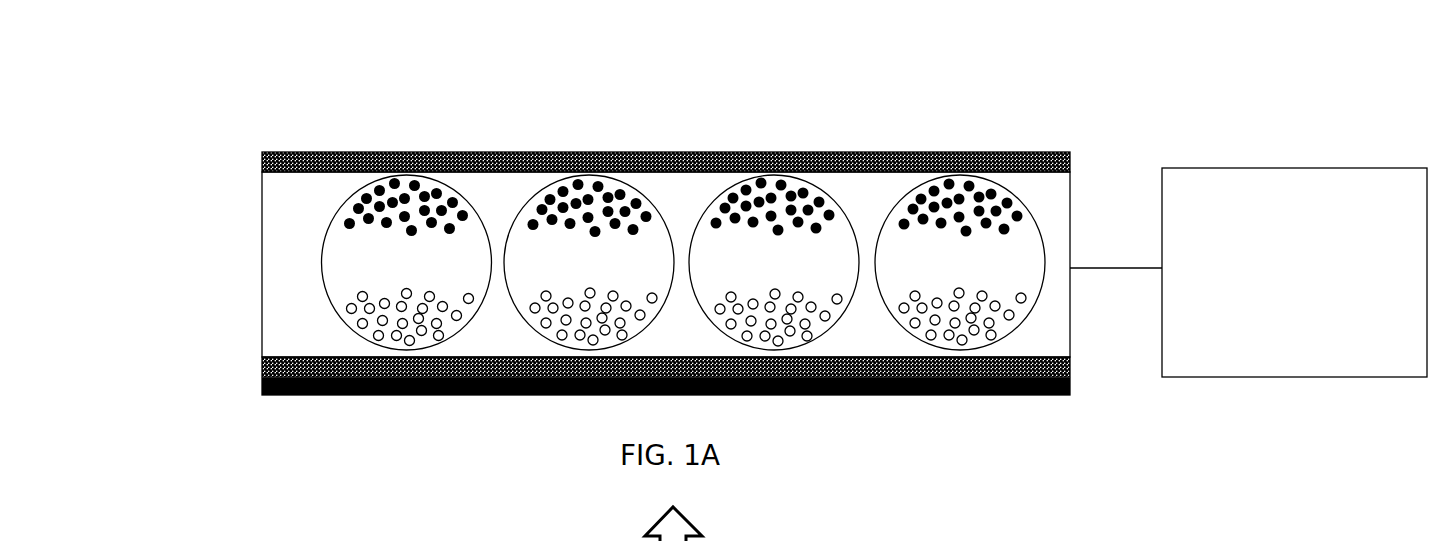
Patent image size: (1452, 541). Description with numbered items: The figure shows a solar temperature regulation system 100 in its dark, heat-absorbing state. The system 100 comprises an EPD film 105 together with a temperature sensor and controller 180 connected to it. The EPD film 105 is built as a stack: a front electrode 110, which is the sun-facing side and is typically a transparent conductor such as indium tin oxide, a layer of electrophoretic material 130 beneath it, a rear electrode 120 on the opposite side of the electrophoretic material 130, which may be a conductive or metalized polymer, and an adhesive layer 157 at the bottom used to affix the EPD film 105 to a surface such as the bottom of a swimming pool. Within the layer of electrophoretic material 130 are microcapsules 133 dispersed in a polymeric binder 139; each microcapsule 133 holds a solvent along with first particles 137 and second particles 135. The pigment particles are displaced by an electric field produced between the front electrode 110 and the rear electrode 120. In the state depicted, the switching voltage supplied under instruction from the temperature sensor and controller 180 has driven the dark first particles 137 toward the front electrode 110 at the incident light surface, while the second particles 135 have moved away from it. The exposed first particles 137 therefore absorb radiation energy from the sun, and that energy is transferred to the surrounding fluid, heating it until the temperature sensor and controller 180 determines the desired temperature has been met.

The system 100 is at (1063, 120).
The EPD film 105 is at (158, 145).
The front electrode 110 is at (271, 155).
The rear electrode 120 is at (298, 363).
The layer of electrophoretic material 130 is at (280, 287).
The microcapsules 133 is at (593, 280).
The second particles 135 is at (540, 323).
The first particles 137 is at (545, 195).
The polymeric binder 139 is at (701, 206).
The adhesive layer 157 is at (260, 390).
The temperature sensor and controller 180 is at (1376, 208).